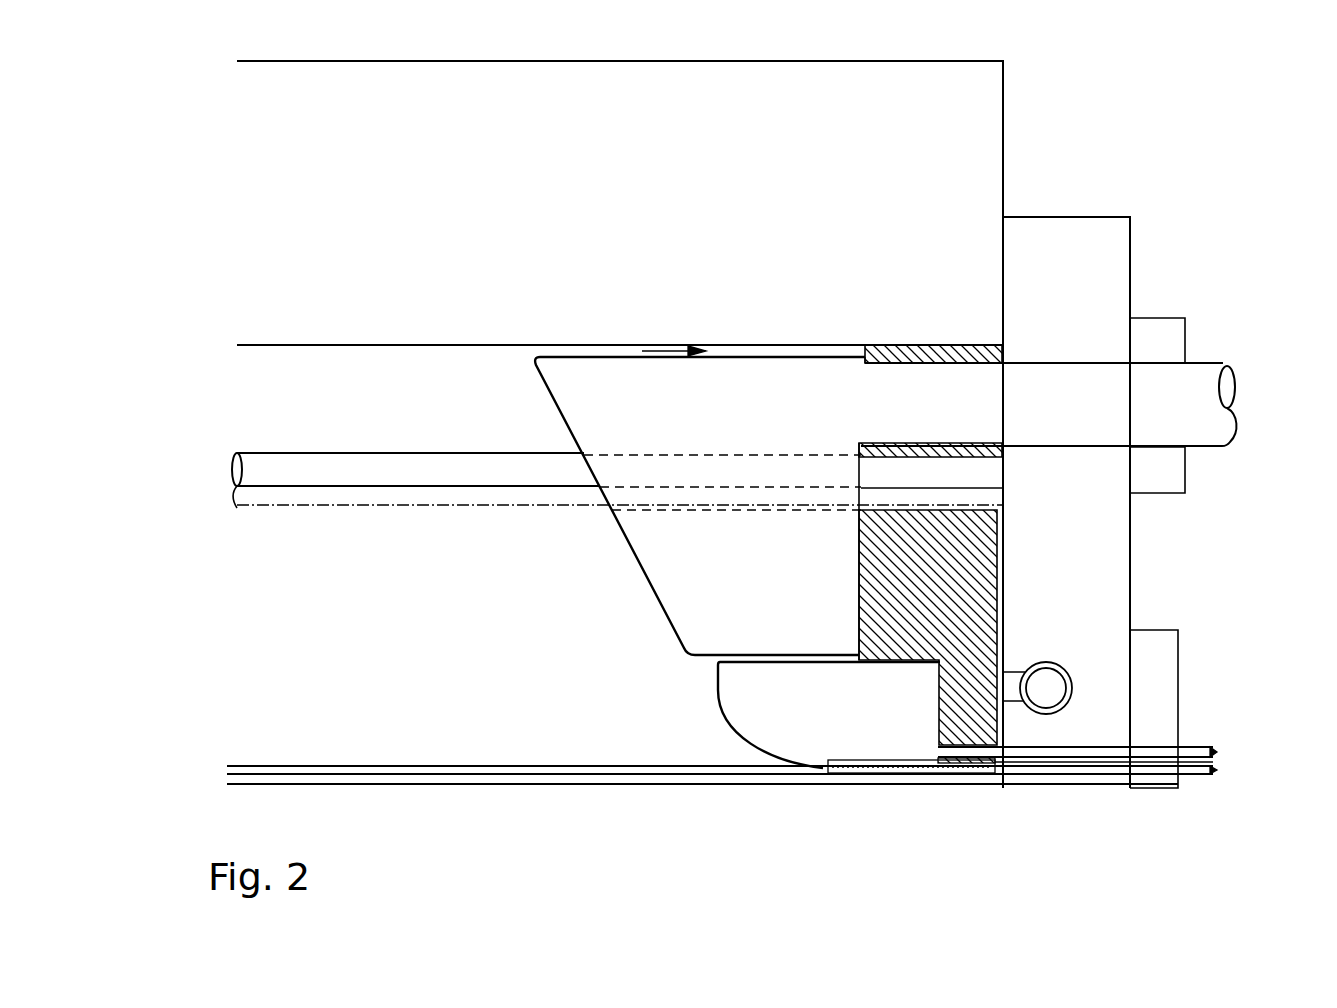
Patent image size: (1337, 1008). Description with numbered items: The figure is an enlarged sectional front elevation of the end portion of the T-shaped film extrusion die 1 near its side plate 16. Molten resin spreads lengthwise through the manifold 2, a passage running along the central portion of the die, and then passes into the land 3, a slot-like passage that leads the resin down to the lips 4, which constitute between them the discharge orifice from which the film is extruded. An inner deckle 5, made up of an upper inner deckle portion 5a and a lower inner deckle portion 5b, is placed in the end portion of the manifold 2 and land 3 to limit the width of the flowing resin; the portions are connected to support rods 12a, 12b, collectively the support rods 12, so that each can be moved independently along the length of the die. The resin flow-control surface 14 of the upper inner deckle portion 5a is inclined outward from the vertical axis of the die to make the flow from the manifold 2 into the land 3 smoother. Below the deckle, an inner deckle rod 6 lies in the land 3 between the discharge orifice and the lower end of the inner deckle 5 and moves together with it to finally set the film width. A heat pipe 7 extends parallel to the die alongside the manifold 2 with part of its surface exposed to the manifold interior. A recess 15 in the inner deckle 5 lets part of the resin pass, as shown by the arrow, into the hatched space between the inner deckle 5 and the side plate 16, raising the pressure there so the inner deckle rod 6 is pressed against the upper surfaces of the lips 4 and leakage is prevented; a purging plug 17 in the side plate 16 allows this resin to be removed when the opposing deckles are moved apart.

The T-shaped film extrusion die 1 is at (1030, 128).
The manifold 2 is at (330, 428).
The land 3 is at (277, 592).
The lips 4 is at (243, 777).
The inner deckle 5 is at (799, 727).
The upper inner deckle portion 5a is at (712, 590).
The lower inner deckle portion 5b is at (771, 715).
The inner deckle rod 6 is at (1055, 770).
The heat pipe 7 is at (263, 477).
The support rod 12 is at (1219, 553).
The support rod 12a is at (1208, 417).
The support rod 12b is at (1194, 747).
The resin flow-control surface 14 is at (645, 582).
The recess 15 is at (818, 352).
The side plate 16 is at (1100, 272).
The purging plug 17 is at (1053, 693).